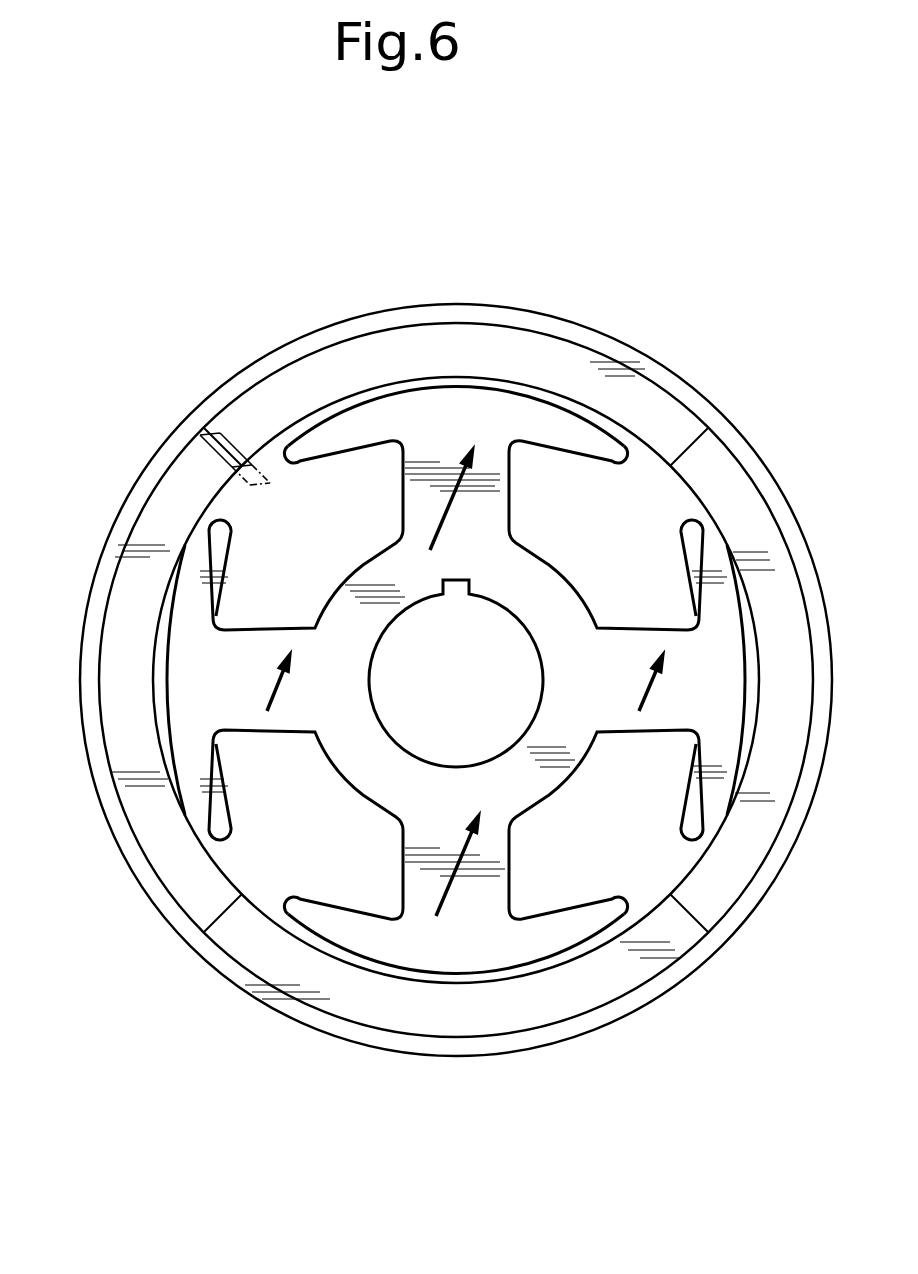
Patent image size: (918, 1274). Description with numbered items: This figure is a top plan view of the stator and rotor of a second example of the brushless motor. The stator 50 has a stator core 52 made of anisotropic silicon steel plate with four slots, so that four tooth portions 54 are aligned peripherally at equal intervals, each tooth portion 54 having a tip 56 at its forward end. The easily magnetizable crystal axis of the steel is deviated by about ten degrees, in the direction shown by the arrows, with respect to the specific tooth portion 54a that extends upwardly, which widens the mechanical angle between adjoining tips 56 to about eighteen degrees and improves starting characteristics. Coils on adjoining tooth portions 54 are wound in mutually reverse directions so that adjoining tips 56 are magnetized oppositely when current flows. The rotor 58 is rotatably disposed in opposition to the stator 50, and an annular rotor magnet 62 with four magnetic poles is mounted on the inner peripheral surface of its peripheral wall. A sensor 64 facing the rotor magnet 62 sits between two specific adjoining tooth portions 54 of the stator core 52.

The stator 50 is at (718, 548).
The stator core 52 is at (578, 765).
The tooth portion 54 is at (252, 630).
The specific tooth portion 54a is at (515, 490).
The tip 56 is at (347, 420).
The rotor 58 is at (152, 912).
The rotor magnet 62 is at (330, 995).
The sensor 64 is at (212, 418).